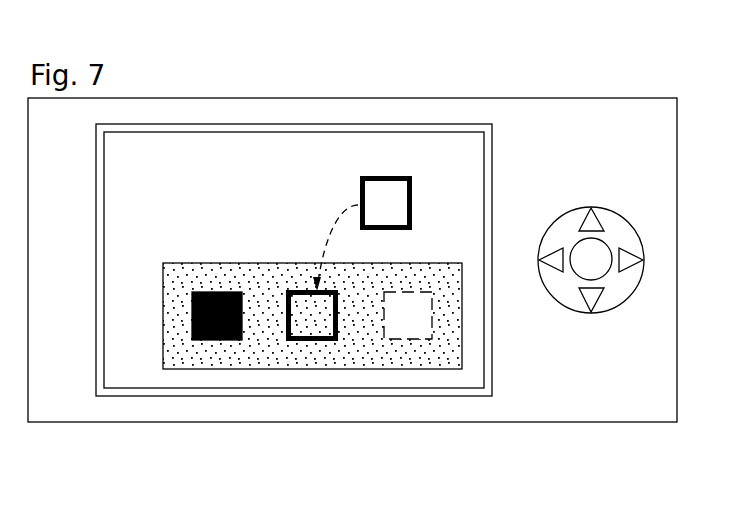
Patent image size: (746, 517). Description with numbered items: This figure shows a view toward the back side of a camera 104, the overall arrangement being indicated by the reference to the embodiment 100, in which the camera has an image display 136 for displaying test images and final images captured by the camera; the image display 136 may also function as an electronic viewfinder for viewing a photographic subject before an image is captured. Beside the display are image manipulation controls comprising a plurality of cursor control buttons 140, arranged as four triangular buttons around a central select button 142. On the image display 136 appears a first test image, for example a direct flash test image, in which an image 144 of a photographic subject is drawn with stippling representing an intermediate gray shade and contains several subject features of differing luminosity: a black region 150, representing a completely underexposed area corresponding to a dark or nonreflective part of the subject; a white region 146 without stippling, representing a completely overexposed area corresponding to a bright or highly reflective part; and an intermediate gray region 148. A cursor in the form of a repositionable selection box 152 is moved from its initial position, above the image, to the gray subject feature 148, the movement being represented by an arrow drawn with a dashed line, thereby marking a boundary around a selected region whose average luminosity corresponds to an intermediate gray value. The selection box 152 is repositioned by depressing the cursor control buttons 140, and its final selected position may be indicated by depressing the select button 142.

The system 100 is at (560, 54).
The camera 104 is at (644, 138).
The image display 136 is at (200, 124).
The cursor control buttons 140 is at (598, 222).
The select button 142 is at (607, 246).
The image of photographic subject 144 is at (238, 369).
The white subject feature 146 is at (425, 339).
The intermediate gray subject feature 148 is at (328, 341).
The black subject feature 150 is at (200, 340).
The selection box 152 is at (383, 176).